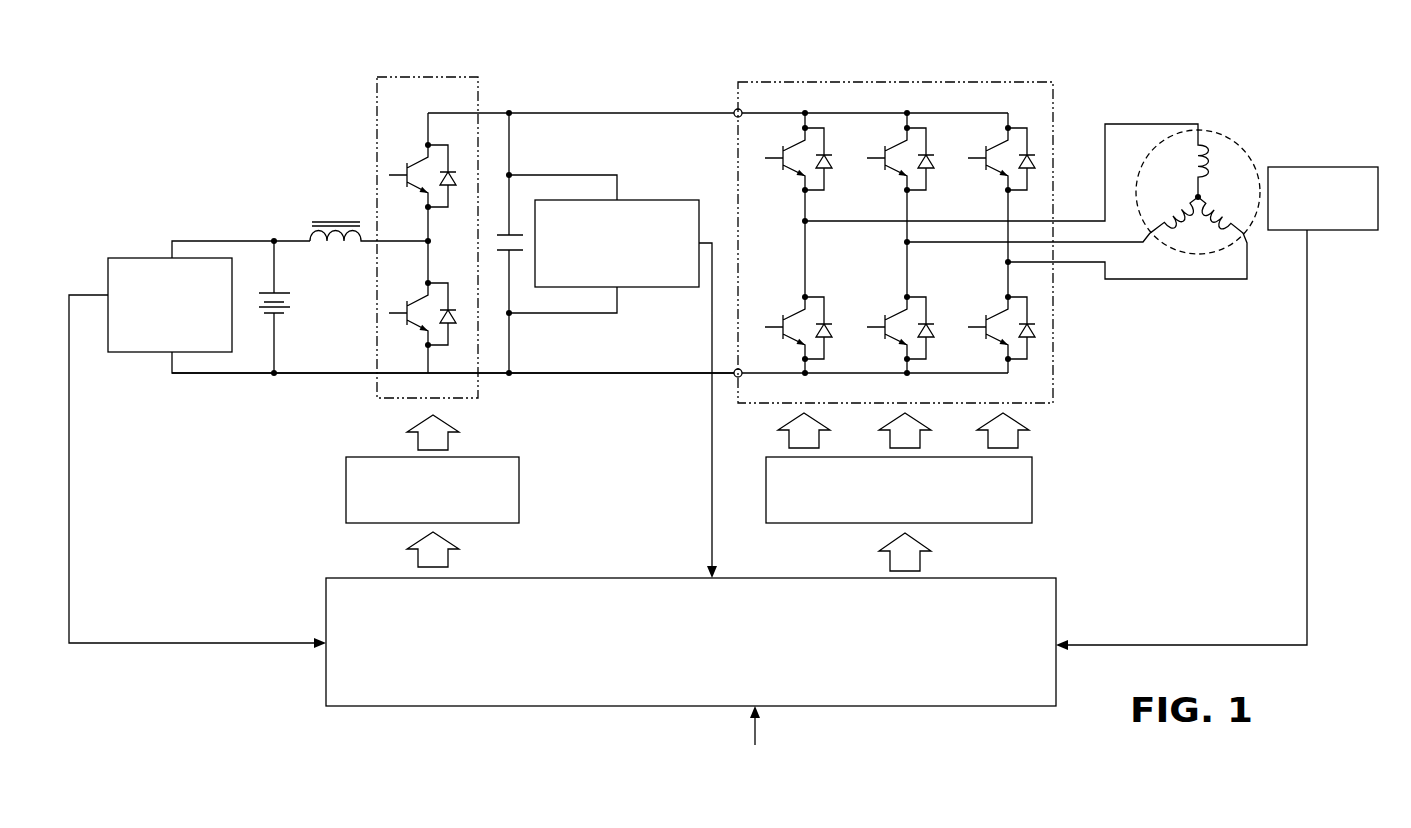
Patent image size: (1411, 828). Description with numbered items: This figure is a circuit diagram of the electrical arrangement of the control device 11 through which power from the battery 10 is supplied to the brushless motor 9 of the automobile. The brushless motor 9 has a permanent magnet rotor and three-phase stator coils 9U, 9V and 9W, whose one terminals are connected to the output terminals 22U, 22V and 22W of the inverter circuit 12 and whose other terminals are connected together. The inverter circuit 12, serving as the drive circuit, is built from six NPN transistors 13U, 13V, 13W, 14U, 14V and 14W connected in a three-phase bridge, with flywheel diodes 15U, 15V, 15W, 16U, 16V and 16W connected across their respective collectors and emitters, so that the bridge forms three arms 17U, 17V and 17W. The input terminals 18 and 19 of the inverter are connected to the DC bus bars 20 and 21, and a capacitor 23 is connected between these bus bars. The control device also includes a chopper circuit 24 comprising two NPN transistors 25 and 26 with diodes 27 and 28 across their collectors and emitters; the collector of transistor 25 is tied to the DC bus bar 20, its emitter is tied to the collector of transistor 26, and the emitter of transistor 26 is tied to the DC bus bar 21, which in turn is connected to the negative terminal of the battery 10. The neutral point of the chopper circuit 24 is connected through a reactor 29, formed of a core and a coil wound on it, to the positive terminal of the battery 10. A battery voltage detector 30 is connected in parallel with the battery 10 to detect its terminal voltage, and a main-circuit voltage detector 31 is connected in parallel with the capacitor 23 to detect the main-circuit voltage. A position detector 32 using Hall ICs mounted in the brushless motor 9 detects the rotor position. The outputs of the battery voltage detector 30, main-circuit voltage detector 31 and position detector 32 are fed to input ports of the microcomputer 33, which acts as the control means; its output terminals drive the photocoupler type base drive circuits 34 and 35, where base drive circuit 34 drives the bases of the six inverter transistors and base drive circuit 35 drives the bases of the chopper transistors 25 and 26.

The brushless motor 9 is at (1200, 130).
The stator coil 9U is at (1210, 157).
The stator coil 9V is at (1185, 227).
The stator coil 9W is at (1213, 230).
The battery 10 is at (291, 288).
The control device 11 is at (680, 75).
The inverter circuit 12 is at (908, 80).
The NPN transistor 13U is at (781, 155).
The NPN transistor 13V is at (884, 155).
The NPN transistor 13W is at (984, 155).
The NPN transistor 14U is at (780, 323).
The NPN transistor 14V is at (882, 323).
The NPN transistor 14W is at (984, 323).
The flywheel diode 15U is at (938, 162).
The flywheel diode 15V is at (840, 160).
The flywheel diode 15W is at (1040, 157).
The flywheel diode 16U is at (840, 330).
The flywheel diode 16V is at (940, 330).
The flywheel diode 16W is at (1040, 328).
The arm 17U is at (815, 118).
The arm 17V is at (920, 120).
The arm 17W is at (1018, 122).
The input terminal 18 is at (738, 105).
The input terminal 19 is at (738, 378).
The DC bus bar 20 is at (495, 111).
The DC bus bar 21 is at (538, 376).
The output terminal 22U is at (803, 222).
The output terminal 22V is at (905, 243).
The output terminal 22W is at (1005, 262).
The capacitor 23 is at (515, 258).
The chopper circuit 24 is at (420, 77).
The NPN transistor 25 is at (398, 165).
The NPN transistor 26 is at (400, 305).
The diode 27 is at (456, 162).
The diode 28 is at (453, 300).
The reactor 29 is at (335, 218).
The battery voltage detector 30 is at (105, 313).
The main-circuit voltage detector 31 is at (686, 199).
The position detector 32 is at (1283, 232).
The microcomputer 33 is at (932, 707).
The base drive circuit 34 is at (1033, 490).
The base drive circuit 35 is at (345, 488).